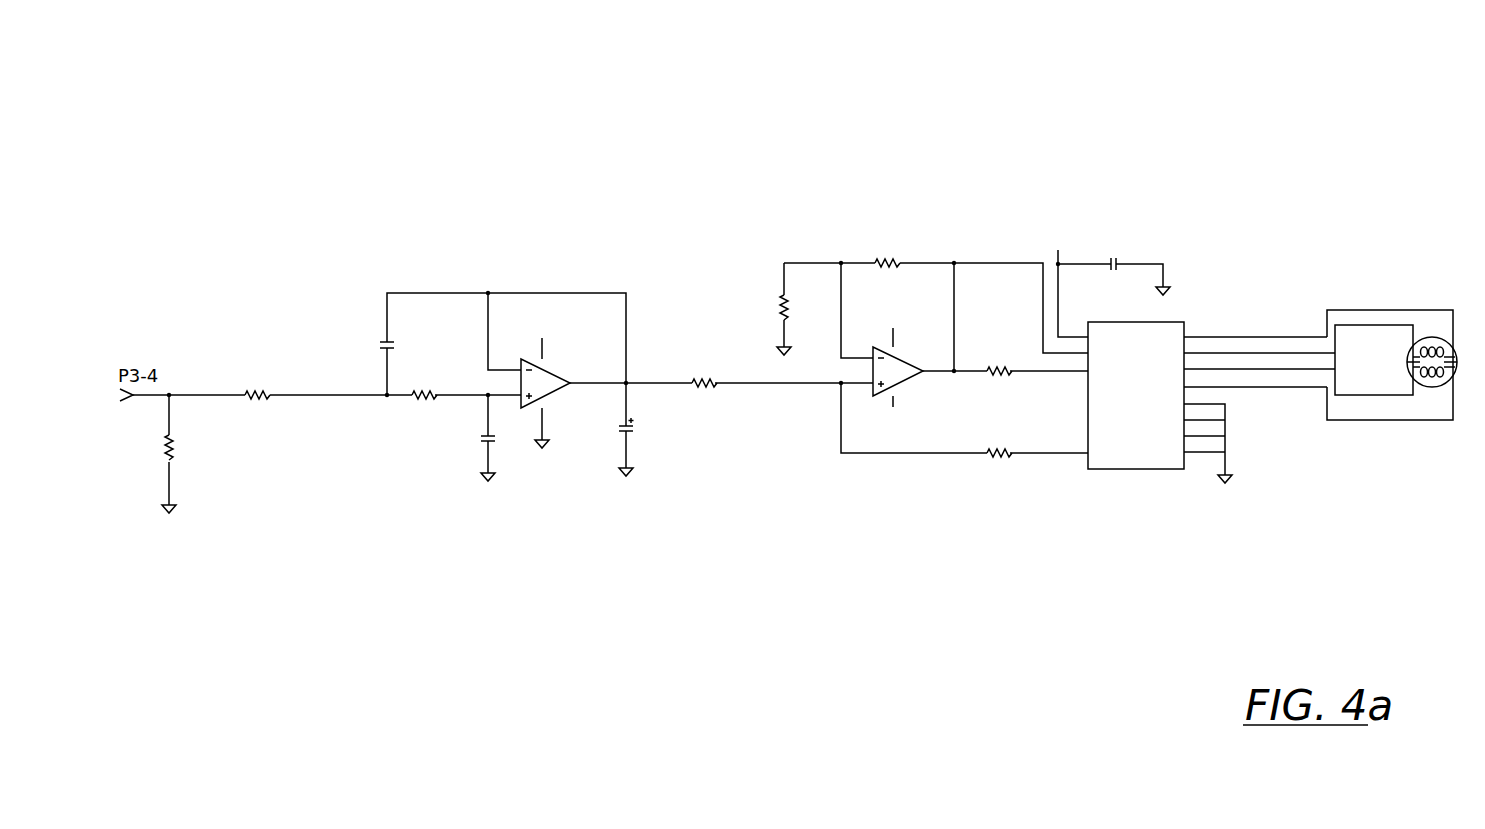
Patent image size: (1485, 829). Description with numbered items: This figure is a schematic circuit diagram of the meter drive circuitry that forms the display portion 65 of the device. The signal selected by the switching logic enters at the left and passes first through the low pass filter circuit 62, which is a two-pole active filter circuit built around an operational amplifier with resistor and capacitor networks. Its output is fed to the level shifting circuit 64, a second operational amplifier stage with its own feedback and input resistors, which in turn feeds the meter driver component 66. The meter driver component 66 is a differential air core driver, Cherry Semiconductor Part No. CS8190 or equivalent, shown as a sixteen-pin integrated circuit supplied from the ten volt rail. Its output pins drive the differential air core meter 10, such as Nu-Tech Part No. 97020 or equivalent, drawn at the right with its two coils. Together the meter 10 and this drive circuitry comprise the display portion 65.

The meter 10 is at (1420, 340).
The low pass filter circuit 62 is at (452, 432).
The level shifting circuit 64 is at (842, 478).
The display portion 65 is at (675, 595).
The meter driver component 66 is at (1088, 469).